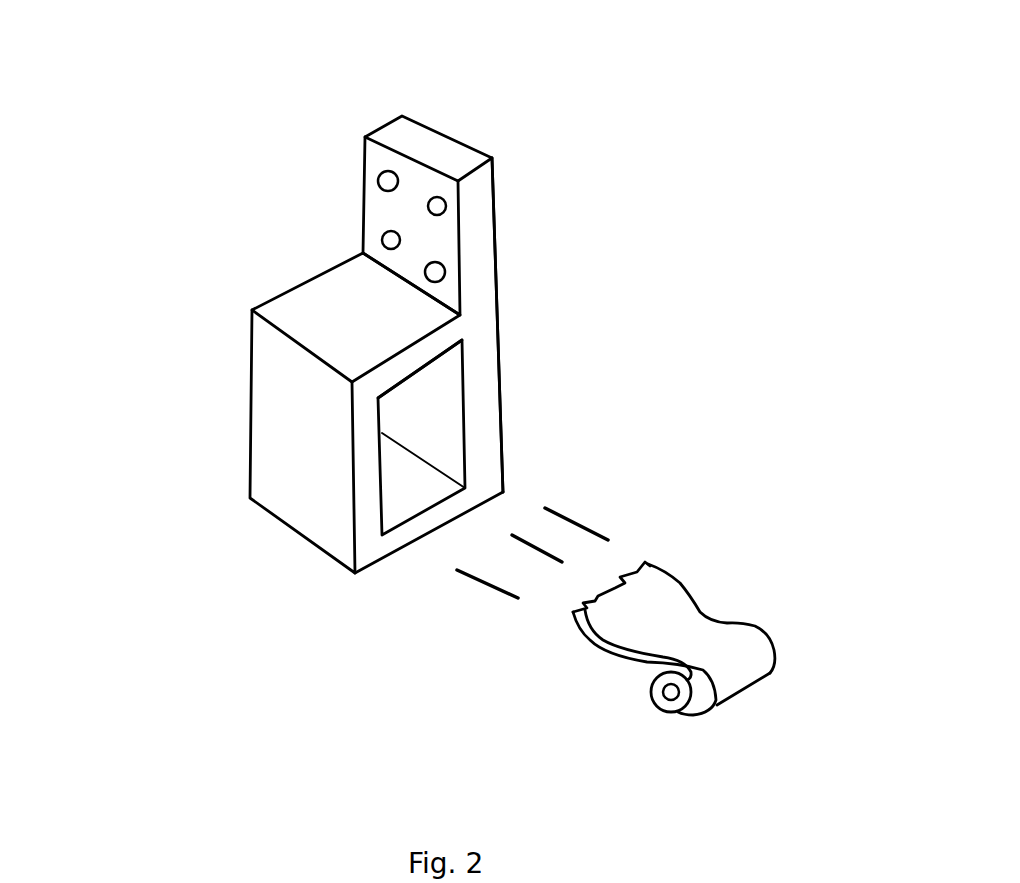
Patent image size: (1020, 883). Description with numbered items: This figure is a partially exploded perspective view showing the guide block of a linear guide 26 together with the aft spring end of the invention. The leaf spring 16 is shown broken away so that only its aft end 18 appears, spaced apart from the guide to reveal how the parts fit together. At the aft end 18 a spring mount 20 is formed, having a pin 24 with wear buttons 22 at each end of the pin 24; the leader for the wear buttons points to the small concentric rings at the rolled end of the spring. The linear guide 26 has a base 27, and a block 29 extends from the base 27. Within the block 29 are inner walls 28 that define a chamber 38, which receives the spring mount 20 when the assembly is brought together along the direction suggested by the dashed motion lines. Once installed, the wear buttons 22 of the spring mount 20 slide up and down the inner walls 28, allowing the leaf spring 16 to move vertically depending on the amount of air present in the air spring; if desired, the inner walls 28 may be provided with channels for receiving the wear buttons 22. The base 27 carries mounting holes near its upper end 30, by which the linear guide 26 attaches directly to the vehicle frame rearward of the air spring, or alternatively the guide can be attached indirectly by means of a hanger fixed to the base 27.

The leaf spring 16 is at (665, 593).
The aft end 18 is at (743, 653).
The spring mount 20 is at (652, 689).
The wear buttons 22 is at (671, 698).
The pin 24 is at (685, 693).
The linear guide 26 is at (482, 290).
The base 27 is at (417, 178).
The inner walls 28 is at (403, 495).
The block 29 is at (267, 395).
The upper end 30 is at (462, 163).
The chamber 38 is at (400, 410).